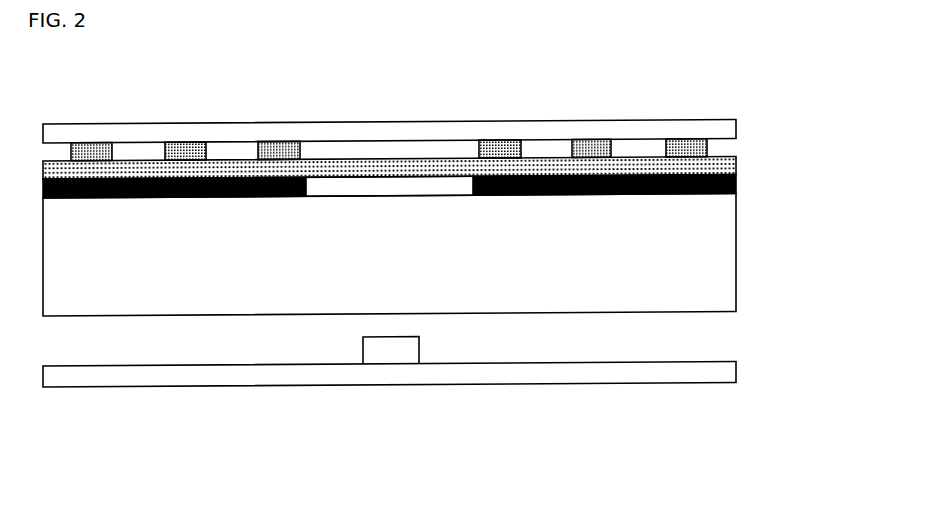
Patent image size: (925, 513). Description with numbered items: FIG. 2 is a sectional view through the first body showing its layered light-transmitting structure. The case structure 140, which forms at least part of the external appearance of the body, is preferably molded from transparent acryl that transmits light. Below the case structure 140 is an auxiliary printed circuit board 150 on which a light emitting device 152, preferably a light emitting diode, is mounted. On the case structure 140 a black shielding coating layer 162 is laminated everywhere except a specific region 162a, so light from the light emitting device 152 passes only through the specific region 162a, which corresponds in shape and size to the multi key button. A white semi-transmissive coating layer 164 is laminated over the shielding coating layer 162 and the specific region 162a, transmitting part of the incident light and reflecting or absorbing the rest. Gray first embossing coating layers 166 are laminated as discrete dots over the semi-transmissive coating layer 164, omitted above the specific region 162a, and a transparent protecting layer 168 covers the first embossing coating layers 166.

The case structure 140 is at (718, 267).
The auxiliary printed circuit board 150 is at (715, 376).
The light emitting device 152 is at (393, 352).
The shielding coating layer 162 is at (733, 190).
The specific region 162a is at (393, 188).
The semi-transmissive coating layer 164 is at (733, 174).
The first embossing coating layers 166 is at (697, 156).
The protecting layer 168 is at (724, 130).